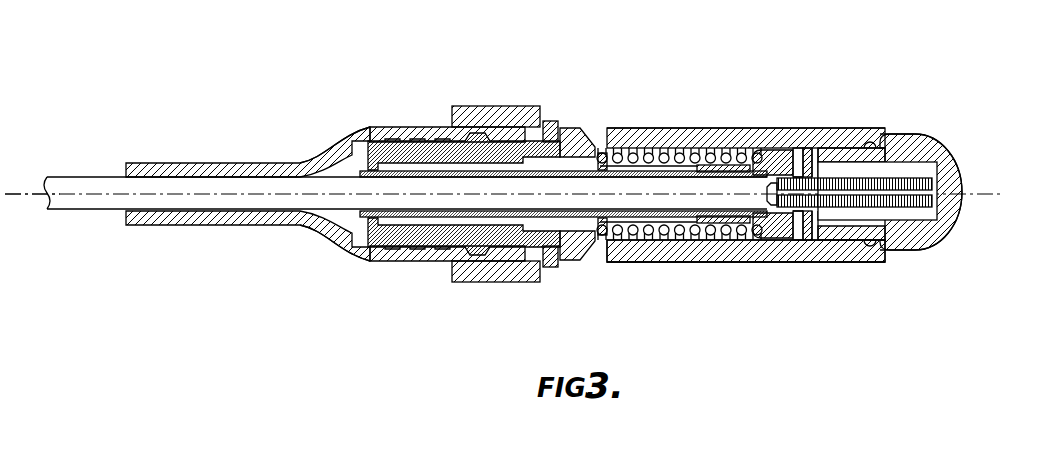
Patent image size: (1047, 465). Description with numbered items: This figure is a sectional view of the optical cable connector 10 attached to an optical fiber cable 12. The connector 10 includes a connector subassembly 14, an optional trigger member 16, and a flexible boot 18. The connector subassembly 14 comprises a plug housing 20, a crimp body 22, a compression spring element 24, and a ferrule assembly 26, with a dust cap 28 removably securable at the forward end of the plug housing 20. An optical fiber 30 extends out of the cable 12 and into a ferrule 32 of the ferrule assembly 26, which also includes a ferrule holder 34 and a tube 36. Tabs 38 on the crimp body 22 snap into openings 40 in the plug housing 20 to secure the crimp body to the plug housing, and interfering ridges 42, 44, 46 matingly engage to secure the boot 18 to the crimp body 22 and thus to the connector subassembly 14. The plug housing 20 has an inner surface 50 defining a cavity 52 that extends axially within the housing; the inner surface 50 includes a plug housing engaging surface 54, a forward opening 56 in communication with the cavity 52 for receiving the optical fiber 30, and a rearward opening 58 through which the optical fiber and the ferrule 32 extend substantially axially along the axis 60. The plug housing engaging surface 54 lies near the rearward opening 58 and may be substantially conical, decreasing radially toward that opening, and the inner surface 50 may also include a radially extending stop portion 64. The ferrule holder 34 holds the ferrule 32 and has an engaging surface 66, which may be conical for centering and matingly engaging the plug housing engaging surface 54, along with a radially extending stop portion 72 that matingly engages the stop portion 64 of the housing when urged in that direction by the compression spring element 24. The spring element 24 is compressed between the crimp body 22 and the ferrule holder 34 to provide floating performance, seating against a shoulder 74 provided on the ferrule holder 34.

The connector 10 is at (757, 75).
The optical fiber cable 12 is at (90, 209).
The connector subassembly 14 is at (723, 273).
The trigger member 16 is at (480, 106).
The flexible boot 18 is at (245, 226).
The plug housing 20 is at (833, 262).
The crimp body 22 is at (372, 248).
The compression spring element 24 is at (718, 129).
The ferrule assembly 26 is at (817, 178).
The dust cap 28 is at (955, 170).
The optical fiber 30 is at (932, 165).
The ferrule 32 is at (920, 206).
The ferrule holder 34 is at (790, 225).
The tube 36 is at (700, 223).
The tabs 38 is at (553, 168).
The openings 40 is at (563, 128).
The interfering ridge 42 is at (370, 131).
The interfering ridge 44 is at (508, 122).
The interfering ridge 46 is at (480, 134).
The inner surface 50 is at (780, 208).
The cavity 52 is at (826, 130).
The plug housing engaging surface 54 is at (847, 262).
The forward opening 56 is at (605, 140).
The rearward opening 58 is at (930, 145).
The axis 60 is at (8, 192).
The stop portion 64 is at (812, 150).
The engaging surface 66 is at (835, 170).
The stop portion 72 is at (780, 130).
The shoulder 74 is at (760, 130).